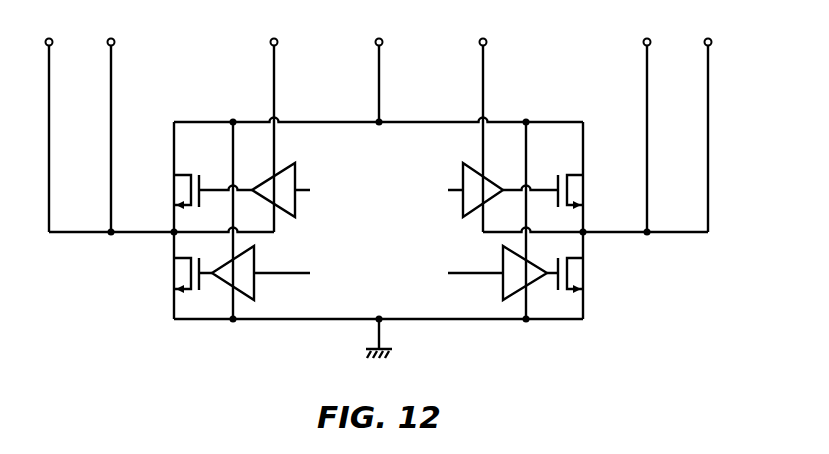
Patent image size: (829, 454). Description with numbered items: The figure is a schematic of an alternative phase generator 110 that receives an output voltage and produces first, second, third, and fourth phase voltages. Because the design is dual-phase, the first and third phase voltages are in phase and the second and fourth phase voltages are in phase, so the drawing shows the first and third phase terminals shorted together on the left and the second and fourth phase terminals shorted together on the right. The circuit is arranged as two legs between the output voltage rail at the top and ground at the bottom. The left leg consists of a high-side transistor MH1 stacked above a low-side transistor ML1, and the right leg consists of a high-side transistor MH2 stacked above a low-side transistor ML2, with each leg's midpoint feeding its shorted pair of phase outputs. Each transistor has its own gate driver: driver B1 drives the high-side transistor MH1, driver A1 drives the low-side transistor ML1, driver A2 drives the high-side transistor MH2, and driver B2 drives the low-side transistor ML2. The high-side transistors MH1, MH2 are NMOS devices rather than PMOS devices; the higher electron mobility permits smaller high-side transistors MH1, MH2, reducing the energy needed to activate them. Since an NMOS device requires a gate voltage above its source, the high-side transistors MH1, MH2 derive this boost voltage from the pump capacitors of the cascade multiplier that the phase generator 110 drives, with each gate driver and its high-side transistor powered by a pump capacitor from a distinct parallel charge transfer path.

The phase generator 110 is at (207, 97).
The high-side transistor MH1 is at (193, 192).
The low-side transistor ML1 is at (175, 275).
The high-side transistor MH2 is at (562, 192).
The low-side transistor ML2 is at (583, 275).
The gate driver A1 is at (273, 273).
The gate driver B1 is at (293, 190).
The gate driver A2 is at (463, 190).
The gate driver B2 is at (485, 273).